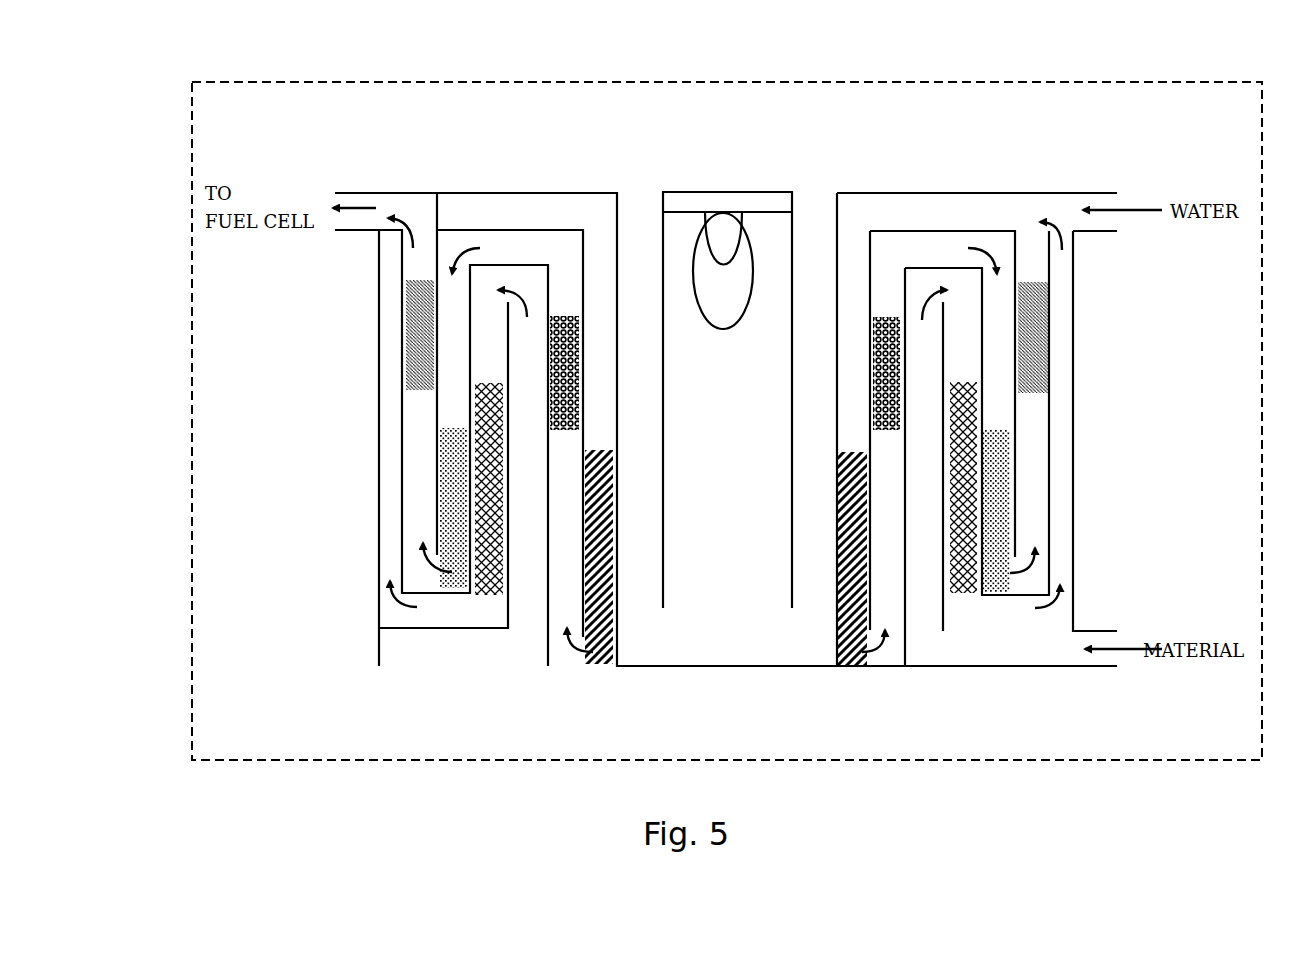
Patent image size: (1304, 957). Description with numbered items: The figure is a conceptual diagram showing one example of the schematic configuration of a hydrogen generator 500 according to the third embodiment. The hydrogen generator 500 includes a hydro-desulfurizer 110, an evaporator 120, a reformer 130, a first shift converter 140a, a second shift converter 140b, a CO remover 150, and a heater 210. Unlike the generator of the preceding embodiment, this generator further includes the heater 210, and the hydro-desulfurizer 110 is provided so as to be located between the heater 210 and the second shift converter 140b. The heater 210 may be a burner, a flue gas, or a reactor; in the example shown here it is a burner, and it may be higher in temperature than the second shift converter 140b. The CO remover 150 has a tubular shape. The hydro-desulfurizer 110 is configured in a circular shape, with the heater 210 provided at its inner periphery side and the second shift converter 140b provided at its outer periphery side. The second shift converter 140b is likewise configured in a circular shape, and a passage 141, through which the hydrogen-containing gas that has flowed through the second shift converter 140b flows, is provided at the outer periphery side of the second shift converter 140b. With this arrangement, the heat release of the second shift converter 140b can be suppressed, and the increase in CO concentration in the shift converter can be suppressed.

The hydrogen generator 500 is at (1031, 42).
The heater 210 is at (725, 202).
The evaporator 120 is at (843, 353).
The first shift converter 140a is at (897, 335).
The CO remover 150 is at (1043, 308).
The hydro-desulfurizer 110 is at (967, 438).
The second shift converter 140b is at (1010, 490).
The passage 141 is at (1033, 518).
The reformer 130 is at (863, 652).